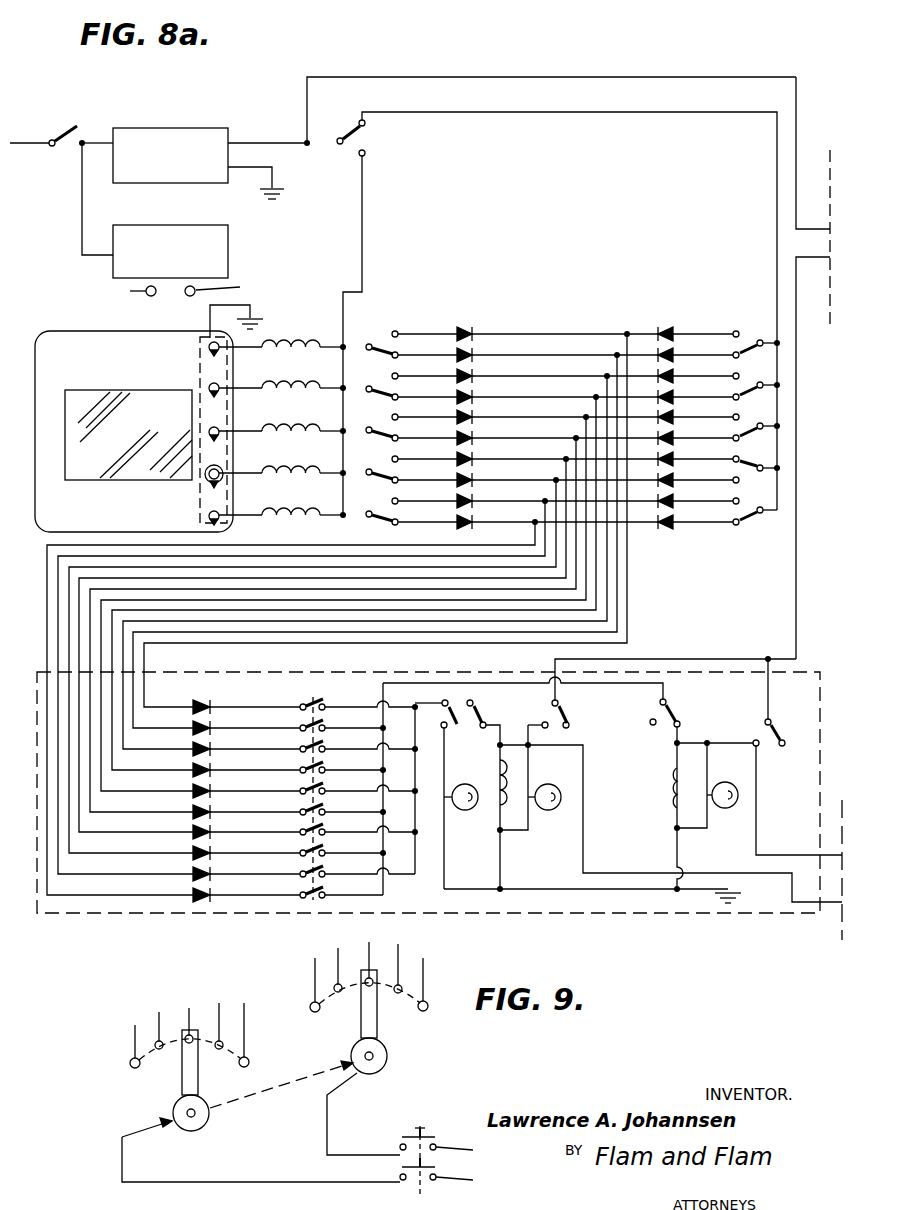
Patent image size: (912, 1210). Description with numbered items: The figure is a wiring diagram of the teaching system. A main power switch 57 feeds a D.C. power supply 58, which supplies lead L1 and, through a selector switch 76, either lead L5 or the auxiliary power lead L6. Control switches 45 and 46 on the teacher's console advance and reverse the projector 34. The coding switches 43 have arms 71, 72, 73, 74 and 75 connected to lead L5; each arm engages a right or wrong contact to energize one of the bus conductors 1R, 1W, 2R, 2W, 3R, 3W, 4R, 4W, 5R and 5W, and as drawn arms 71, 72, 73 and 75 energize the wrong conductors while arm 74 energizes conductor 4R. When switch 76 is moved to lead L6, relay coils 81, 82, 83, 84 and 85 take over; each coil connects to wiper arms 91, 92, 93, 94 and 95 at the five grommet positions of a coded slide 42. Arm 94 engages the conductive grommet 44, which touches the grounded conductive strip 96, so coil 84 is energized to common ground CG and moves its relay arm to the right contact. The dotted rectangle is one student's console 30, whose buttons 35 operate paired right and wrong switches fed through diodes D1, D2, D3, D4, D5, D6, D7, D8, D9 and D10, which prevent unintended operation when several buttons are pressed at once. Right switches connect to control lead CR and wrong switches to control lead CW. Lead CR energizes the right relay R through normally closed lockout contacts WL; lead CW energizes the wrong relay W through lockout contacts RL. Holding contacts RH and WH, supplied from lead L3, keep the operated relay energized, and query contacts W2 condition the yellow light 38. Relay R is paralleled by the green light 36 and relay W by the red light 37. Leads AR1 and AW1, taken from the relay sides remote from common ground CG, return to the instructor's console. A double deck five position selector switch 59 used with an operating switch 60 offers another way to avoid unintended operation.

In FIG. 8A, the main power switch 57 is at (50, 128).
In FIG. 8A, the D.C. power supply 58 is at (193, 128).
In FIG. 8A, the projector 34 is at (214, 225).
In FIG. 8A, the selector switch 76 is at (350, 124).
In FIG. 8A, the control switch 45 is at (130, 292).
In FIG. 8A, the control switch 46 is at (223, 287).
In FIG. 8A, the slide 42 is at (84, 331).
In FIG. 8A, the conductive strip 96 is at (204, 350).
In FIG. 8A, the conductive grommet 44 is at (205, 476).
In FIG. 8A, the relay coil 81 is at (286, 340).
In FIG. 8A, the relay coil 82 is at (296, 381).
In FIG. 8A, the relay coil 83 is at (292, 424).
In FIG. 8A, the relay coil 84 is at (292, 466).
In FIG. 8A, the relay coil 85 is at (292, 508).
In FIG. 8A, the wiper arm 91 is at (241, 352).
In FIG. 8A, the wiper arm 92 is at (247, 393).
In FIG. 8A, the wiper arm 93 is at (241, 437).
In FIG. 8A, the wiper arm 94 is at (245, 478).
In FIG. 8A, the wiper arm 95 is at (243, 521).
In FIG. 8A, the switch arm 71 is at (371, 344).
In FIG. 8A, the switch arm 72 is at (371, 386).
In FIG. 8A, the switch arm 73 is at (371, 427).
In FIG. 8A, the switch arm 74 is at (371, 469).
In FIG. 8A, the switch arm 75 is at (371, 511).
In FIG. 8A, the switches 43 is at (740, 300).
In FIG. 8A, the student's console 30 is at (692, 662).
In FIG. 8A, the buttons 35 is at (300, 726).
In FIG. 8A, the green light 36 is at (560, 788).
In FIG. 8A, the red light 37 is at (733, 783).
In FIG. 8A, the yellow light 38 is at (462, 784).
In FIG. 9, the double deck five position selector switch 59 is at (190, 1132).
In FIG. 9, the operating switch 60 is at (414, 1122).
In FIG. 8A, the diode D1 is at (192, 704).
In FIG. 8A, the diode D2 is at (190, 725).
In FIG. 8A, the diode D3 is at (190, 746).
In FIG. 8A, the diode D4 is at (190, 767).
In FIG. 8A, the diode D5 is at (190, 788).
In FIG. 8A, the diode D6 is at (190, 809).
In FIG. 8A, the diode D7 is at (190, 829).
In FIG. 8A, the diode D8 is at (190, 850).
In FIG. 8A, the diode D9 is at (190, 871).
In FIG. 8A, the diode D10 is at (190, 892).
In FIG. 8A, the lead L1 is at (440, 75).
In FIG. 8A, the lead L3 is at (796, 588).
In FIG. 8A, the lead L5 is at (500, 112).
In FIG. 8A, the auxiliary power lead L6 is at (365, 210).
In FIG. 8A, the common ground CG is at (258, 318).
In FIG. 8A, the control lead CR is at (398, 690).
In FIG. 8A, the control lead CW is at (462, 686).
In FIG. 8A, the query contacts W2 is at (433, 717).
In FIG. 8A, the lockout contacts WL is at (484, 713).
In FIG. 8A, the holding contacts RH is at (569, 712).
In FIG. 8A, the lockout contacts RL is at (670, 709).
In FIG. 8A, the holding contacts WH is at (780, 730).
In FIG. 8A, the right relay R is at (497, 785).
In FIG. 8A, the wrong relay W is at (668, 784).
In FIG. 8A, the answer wrong lead AW1 is at (802, 855).
In FIG. 8A, the answer right lead AR1 is at (836, 908).
In FIG. 8A, the bus conductor 1R is at (628, 557).
In FIG. 8A, the bus conductor 1W is at (618, 573).
In FIG. 8A, the bus conductor 2R is at (608, 590).
In FIG. 8A, the bus conductor 2W is at (598, 607).
In FIG. 8A, the bus conductor 3R is at (478, 600).
In FIG. 8A, the bus conductor 3W is at (437, 589).
In FIG. 8A, the bus conductor 4R is at (413, 578).
In FIG. 8A, the bus conductor 4W is at (378, 567).
In FIG. 8A, the bus conductor 5R is at (318, 556).
In FIG. 8A, the bus conductor 5W is at (290, 537).